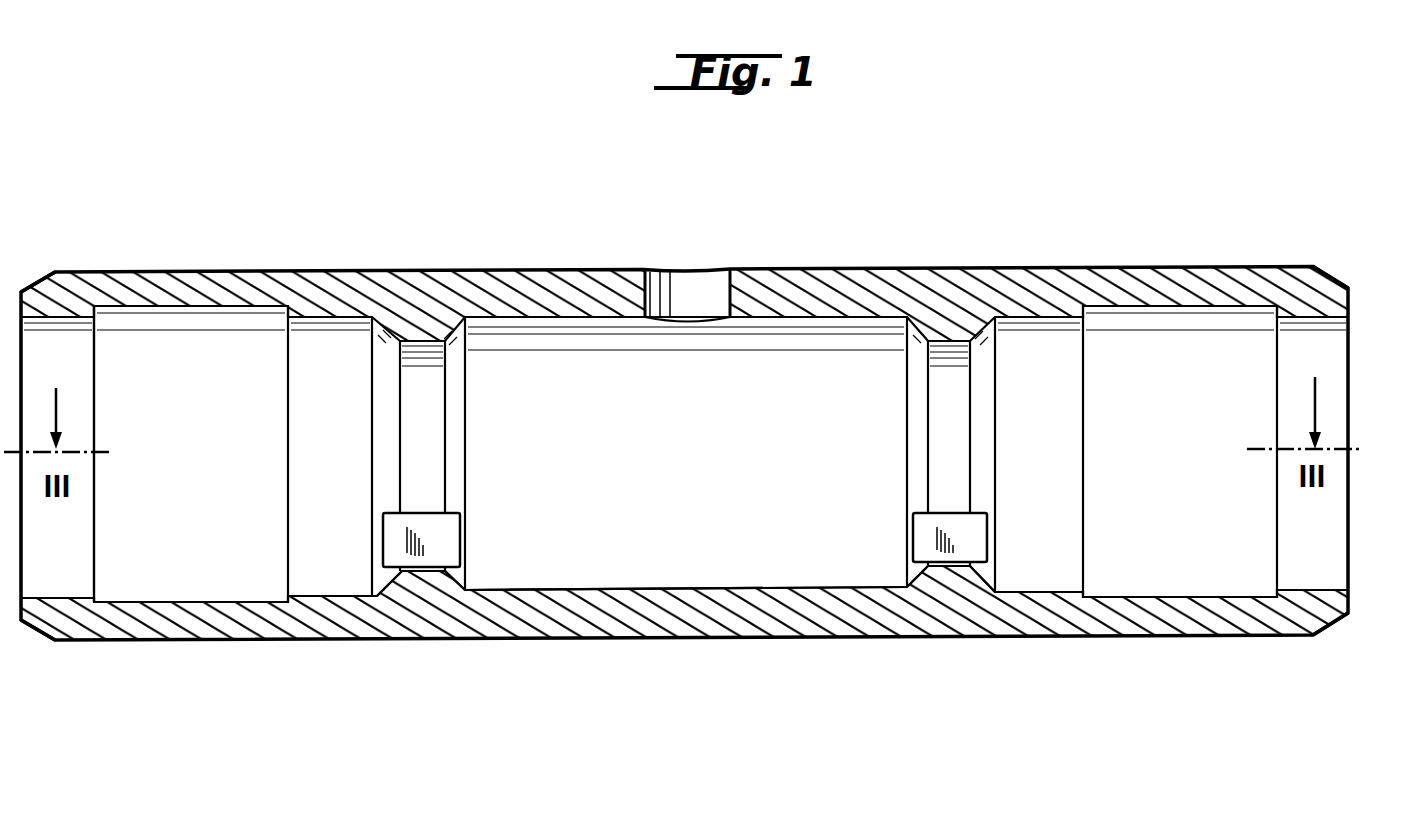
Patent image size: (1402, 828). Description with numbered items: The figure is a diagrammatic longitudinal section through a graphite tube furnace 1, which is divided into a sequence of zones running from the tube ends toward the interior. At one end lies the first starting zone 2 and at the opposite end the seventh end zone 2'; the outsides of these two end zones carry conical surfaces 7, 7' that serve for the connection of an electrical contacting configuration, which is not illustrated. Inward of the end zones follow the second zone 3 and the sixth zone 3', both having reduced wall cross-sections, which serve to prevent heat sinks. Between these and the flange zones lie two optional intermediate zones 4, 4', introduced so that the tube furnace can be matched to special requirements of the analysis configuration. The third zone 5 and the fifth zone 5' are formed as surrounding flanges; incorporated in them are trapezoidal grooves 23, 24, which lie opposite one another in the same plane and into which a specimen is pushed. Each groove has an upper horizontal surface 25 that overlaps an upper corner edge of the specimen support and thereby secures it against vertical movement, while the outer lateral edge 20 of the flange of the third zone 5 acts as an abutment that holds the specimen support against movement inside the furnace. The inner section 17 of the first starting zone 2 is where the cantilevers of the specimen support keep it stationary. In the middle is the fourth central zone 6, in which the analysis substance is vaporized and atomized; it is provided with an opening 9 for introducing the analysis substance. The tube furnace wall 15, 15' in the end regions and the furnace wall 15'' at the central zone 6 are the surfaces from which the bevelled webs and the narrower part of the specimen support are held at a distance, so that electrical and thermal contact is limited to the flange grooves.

The graphite tube furnace 1 is at (880, 256).
The first starting zone 2 is at (57, 259).
The seventh end zone 2' is at (1336, 302).
The second zone 3 is at (191, 254).
The sixth zone 3' is at (1180, 254).
The intermediate zone 4 is at (330, 259).
The intermediate zone 4' is at (1039, 259).
The third zone 5 is at (422, 458).
The fifth zone 5' is at (951, 458).
The fourth central zone 6 is at (770, 610).
The conical surface 7 is at (34, 458).
The conical surface 7' is at (1334, 458).
The opening 9 is at (688, 290).
The tube furnace wall 15 is at (191, 654).
The tube furnace wall 15' is at (332, 649).
The furnace wall 15'' is at (686, 647).
The inner section 17 is at (101, 560).
The outer lateral edge 20 is at (380, 533).
The trapezoidal groove 23 is at (440, 549).
The trapezoidal groove 24 is at (970, 546).
The upper horizontal surface 25 is at (450, 522).